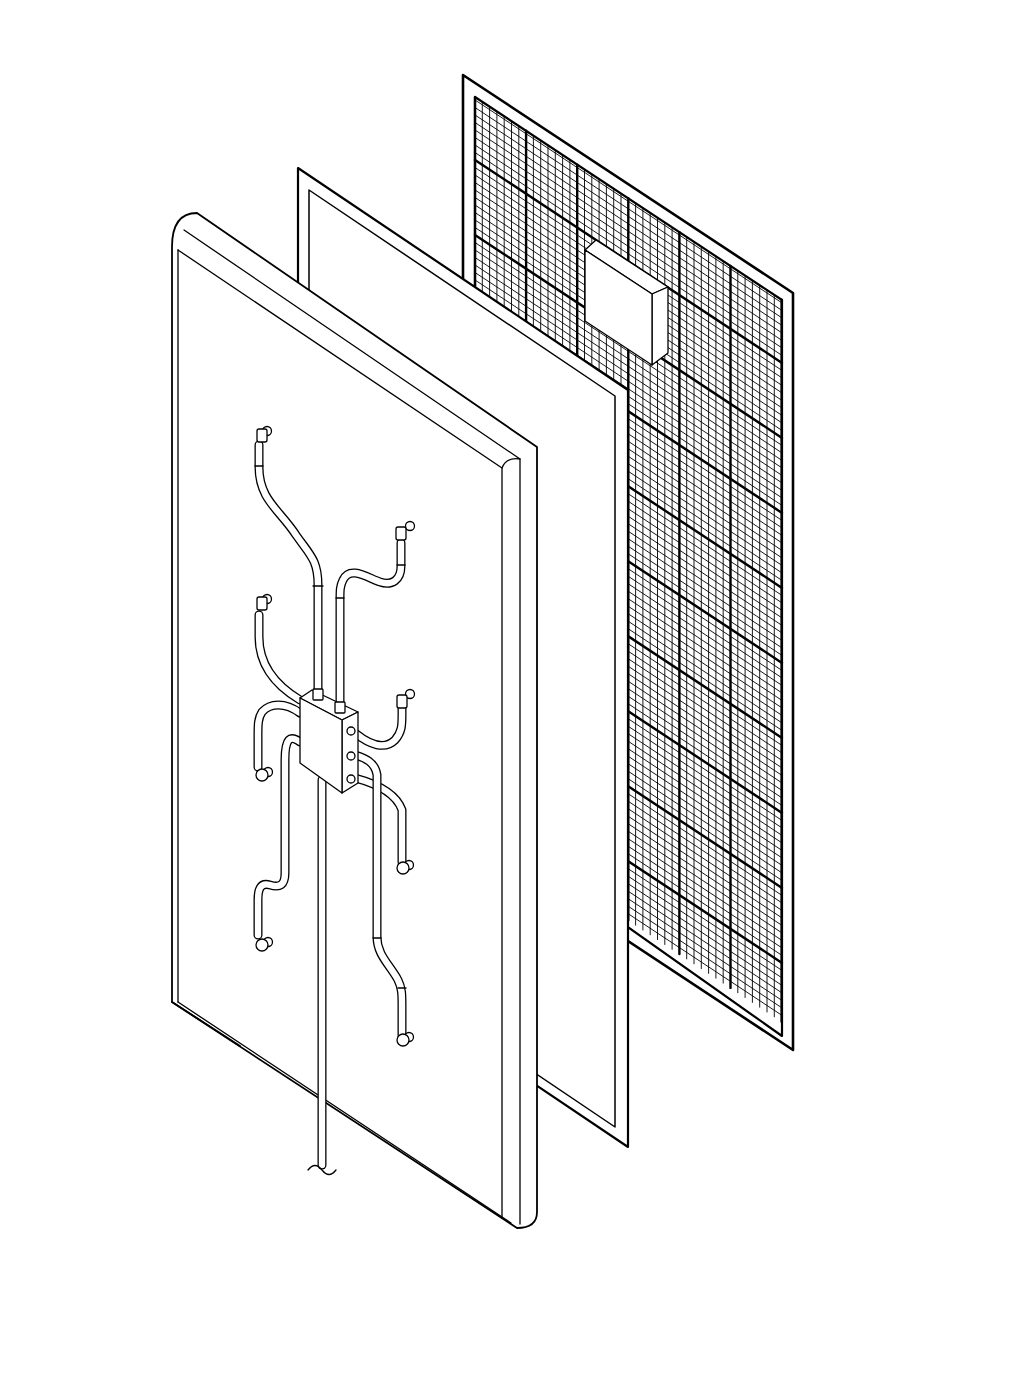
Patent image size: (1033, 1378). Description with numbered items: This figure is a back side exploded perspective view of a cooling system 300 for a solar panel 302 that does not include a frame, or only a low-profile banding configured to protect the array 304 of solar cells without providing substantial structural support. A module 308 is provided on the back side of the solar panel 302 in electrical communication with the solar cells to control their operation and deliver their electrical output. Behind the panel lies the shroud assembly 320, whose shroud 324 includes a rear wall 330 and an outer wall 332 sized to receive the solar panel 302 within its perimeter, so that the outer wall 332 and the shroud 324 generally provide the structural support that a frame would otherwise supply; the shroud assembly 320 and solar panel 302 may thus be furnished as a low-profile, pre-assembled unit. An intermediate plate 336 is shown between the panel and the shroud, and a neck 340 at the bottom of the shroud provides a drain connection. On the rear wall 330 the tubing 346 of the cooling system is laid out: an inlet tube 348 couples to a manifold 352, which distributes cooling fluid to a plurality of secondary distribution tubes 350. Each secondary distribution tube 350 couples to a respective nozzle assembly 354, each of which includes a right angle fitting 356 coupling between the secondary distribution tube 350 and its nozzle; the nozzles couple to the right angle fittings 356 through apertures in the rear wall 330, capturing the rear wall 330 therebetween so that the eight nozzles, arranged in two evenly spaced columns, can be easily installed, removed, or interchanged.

The cooling system 300 is at (158, 44).
The solar panel 302 is at (628, 562).
The array 304 is at (713, 273).
The module 308 is at (623, 267).
The shroud assembly 320 is at (339, 720).
The shroud 324 is at (170, 325).
The rear wall 330 is at (200, 600).
The outer wall 332 is at (537, 1175).
The intermediate plate 336 is at (622, 1092).
The neck 340 is at (190, 1013).
The tubing assembly 346 is at (296, 768).
The inlet tube 348 is at (328, 1053).
The secondary distribution tubes 350 is at (290, 510).
The manifold 352 is at (350, 705).
The nozzle assembly 354 is at (410, 522).
The right angle fitting 356 is at (258, 428).